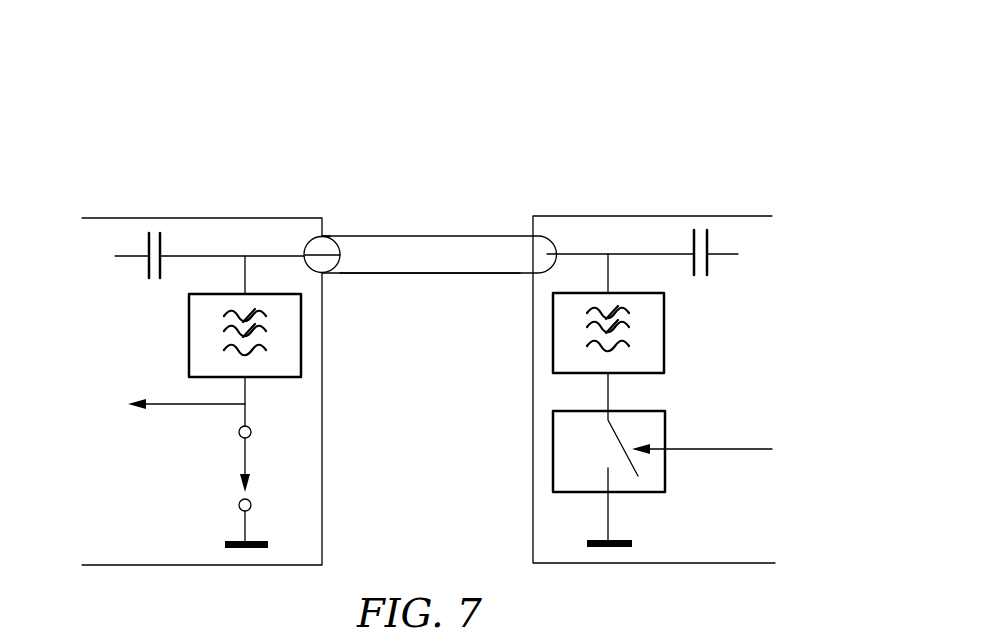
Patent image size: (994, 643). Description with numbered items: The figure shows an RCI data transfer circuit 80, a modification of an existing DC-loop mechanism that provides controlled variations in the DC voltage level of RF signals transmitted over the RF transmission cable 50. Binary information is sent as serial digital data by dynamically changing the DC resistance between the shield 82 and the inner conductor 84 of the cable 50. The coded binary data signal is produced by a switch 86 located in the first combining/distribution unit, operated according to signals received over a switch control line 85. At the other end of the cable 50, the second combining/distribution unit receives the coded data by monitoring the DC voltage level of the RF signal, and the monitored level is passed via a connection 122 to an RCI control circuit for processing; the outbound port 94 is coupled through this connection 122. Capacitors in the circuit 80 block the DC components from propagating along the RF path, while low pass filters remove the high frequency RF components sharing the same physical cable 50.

The RCI data transfer circuit 80 is at (470, 100).
The shield 82 is at (410, 273).
The inner conductor 84 is at (322, 253).
The outbound port 94 is at (338, 222).
The RF transmission cable 50 is at (389, 290).
The connection 122 is at (180, 404).
The switch 86 is at (553, 452).
The switch control line 85 is at (772, 449).